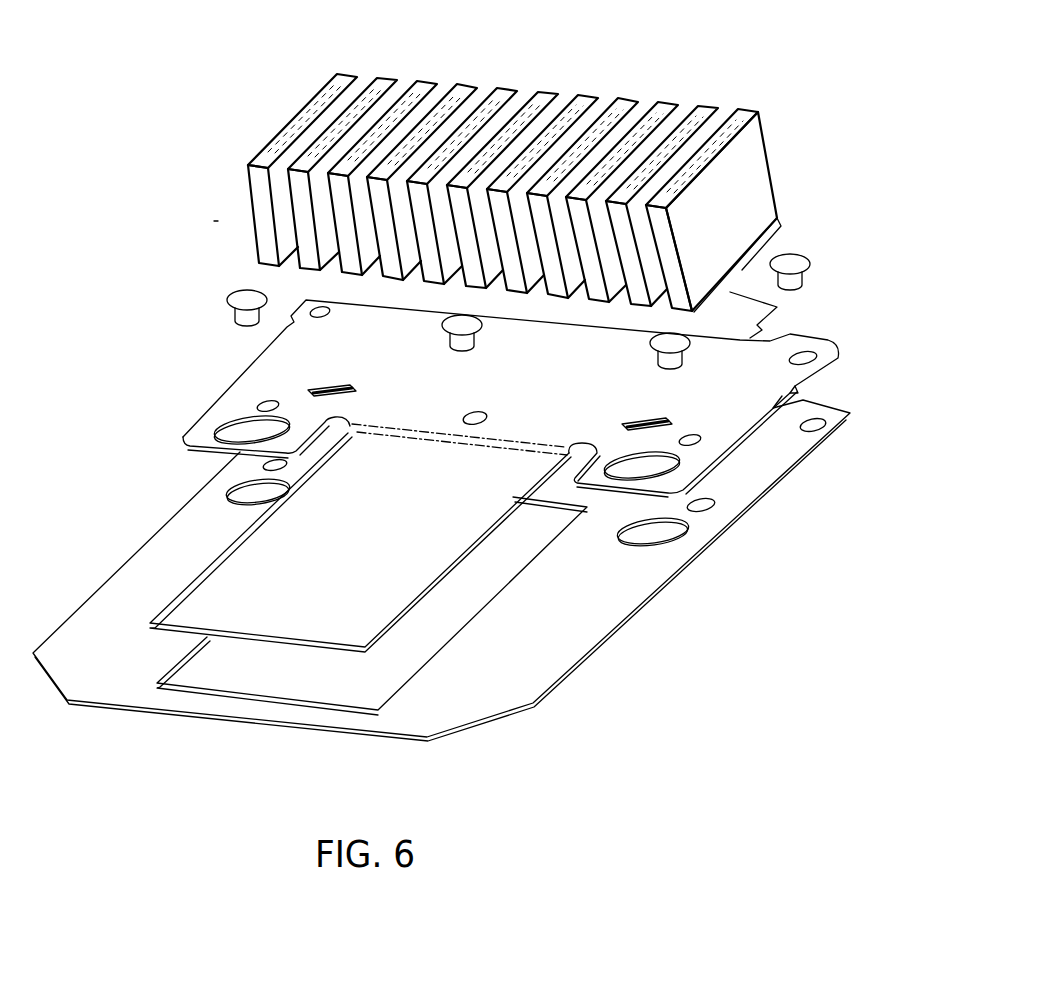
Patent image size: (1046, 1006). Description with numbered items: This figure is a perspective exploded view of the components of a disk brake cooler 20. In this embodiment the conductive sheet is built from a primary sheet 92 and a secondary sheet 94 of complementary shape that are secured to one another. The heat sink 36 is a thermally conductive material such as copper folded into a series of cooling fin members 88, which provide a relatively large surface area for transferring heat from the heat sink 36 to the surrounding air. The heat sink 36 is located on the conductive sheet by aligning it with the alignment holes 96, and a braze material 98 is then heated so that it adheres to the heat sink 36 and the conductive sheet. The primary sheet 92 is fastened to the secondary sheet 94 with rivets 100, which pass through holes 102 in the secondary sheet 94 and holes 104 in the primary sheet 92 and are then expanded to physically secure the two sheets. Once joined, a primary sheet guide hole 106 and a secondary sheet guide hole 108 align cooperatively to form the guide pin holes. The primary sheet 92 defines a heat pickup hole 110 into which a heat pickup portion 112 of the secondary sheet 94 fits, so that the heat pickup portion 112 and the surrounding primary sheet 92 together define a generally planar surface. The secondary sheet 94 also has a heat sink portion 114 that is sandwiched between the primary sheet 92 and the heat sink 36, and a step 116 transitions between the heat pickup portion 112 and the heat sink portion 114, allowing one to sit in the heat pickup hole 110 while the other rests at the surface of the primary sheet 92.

The power module assembly 20 is at (218, 221).
The heat sink 36 is at (512, 82).
The cooling fin members 88 is at (637, 92).
The primary sheet 92 is at (630, 613).
The secondary sheet 94 is at (815, 338).
The alignment holes 96 is at (335, 384).
The braze material 98 is at (777, 300).
The rivets 100 is at (230, 312).
The holes 102 is at (313, 307).
The holes 104 is at (263, 467).
The primary sheet guide hole 106 is at (237, 507).
The secondary sheet guide hole 108 is at (230, 451).
The heat pickup hole 110 is at (298, 686).
The heat pickup portion 112 is at (400, 550).
The heat sink portion 114 is at (800, 389).
The step 116 is at (437, 440).